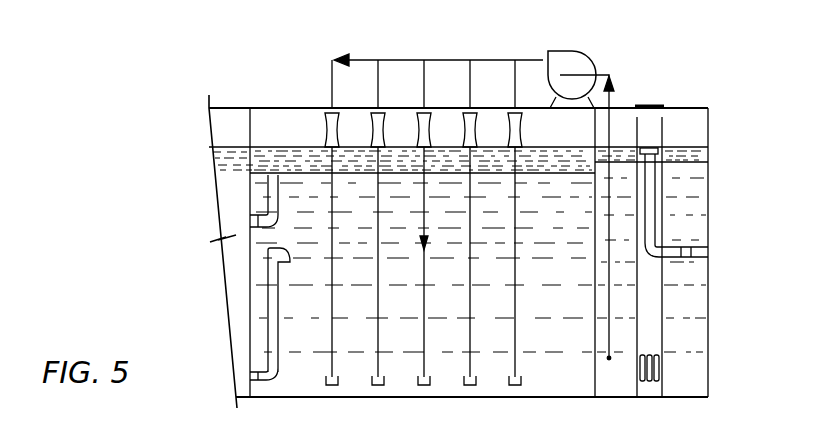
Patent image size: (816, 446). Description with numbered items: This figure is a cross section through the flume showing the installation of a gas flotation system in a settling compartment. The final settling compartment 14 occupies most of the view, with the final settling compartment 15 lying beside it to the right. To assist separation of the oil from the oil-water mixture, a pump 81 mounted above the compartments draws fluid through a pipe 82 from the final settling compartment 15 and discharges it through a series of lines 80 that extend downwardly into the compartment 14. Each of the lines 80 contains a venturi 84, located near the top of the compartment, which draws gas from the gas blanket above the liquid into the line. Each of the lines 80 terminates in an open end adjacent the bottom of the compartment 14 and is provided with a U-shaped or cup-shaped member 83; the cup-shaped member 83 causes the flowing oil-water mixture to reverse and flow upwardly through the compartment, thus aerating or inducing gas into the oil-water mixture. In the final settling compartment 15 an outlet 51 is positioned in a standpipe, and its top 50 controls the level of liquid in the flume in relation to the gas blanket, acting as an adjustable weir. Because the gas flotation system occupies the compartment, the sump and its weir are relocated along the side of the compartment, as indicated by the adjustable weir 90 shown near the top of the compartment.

The final settling compartment 14 is at (561, 341).
The final settling compartment 15 is at (698, 341).
The top of outlet 50 is at (656, 202).
The outlet 51 is at (685, 258).
The lines 80 is at (378, 78).
The pump 81 is at (587, 58).
The pipe 82 is at (611, 101).
The cup-shaped member 83 is at (376, 386).
The venturi 84 is at (371, 123).
The adjustable weir 90 is at (552, 147).